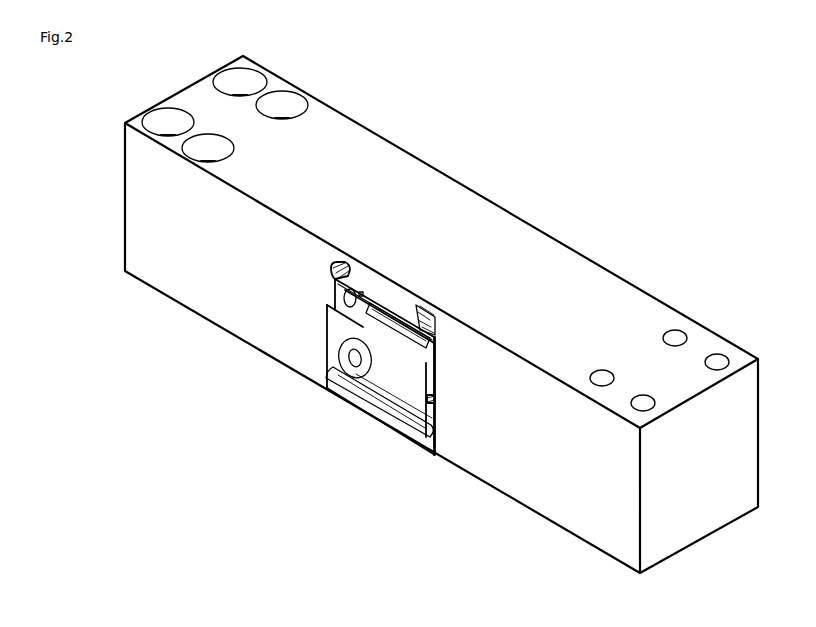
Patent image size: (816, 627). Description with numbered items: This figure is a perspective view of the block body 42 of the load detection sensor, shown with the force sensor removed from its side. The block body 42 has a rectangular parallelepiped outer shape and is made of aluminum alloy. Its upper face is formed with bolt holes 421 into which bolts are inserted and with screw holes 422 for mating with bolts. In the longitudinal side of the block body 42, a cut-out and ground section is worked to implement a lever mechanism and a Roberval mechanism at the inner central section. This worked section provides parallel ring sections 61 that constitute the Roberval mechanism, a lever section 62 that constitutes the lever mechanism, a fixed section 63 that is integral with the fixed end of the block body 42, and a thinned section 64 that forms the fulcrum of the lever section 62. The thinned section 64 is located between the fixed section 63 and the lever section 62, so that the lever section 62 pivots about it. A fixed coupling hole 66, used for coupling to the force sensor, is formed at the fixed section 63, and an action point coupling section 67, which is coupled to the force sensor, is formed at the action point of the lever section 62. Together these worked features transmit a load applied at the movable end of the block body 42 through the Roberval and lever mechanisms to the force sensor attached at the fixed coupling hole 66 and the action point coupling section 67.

The block body 42 is at (530, 143).
The bolt holes 421 is at (270, 81).
The screw holes 422 is at (683, 330).
The parallel ring sections 61 is at (381, 306).
The lever section 62 is at (400, 292).
The fixed section 63 is at (394, 392).
The thinned section 64 is at (433, 357).
The fixed coupling hole 66 is at (342, 355).
The action point coupling section 67 is at (380, 289).